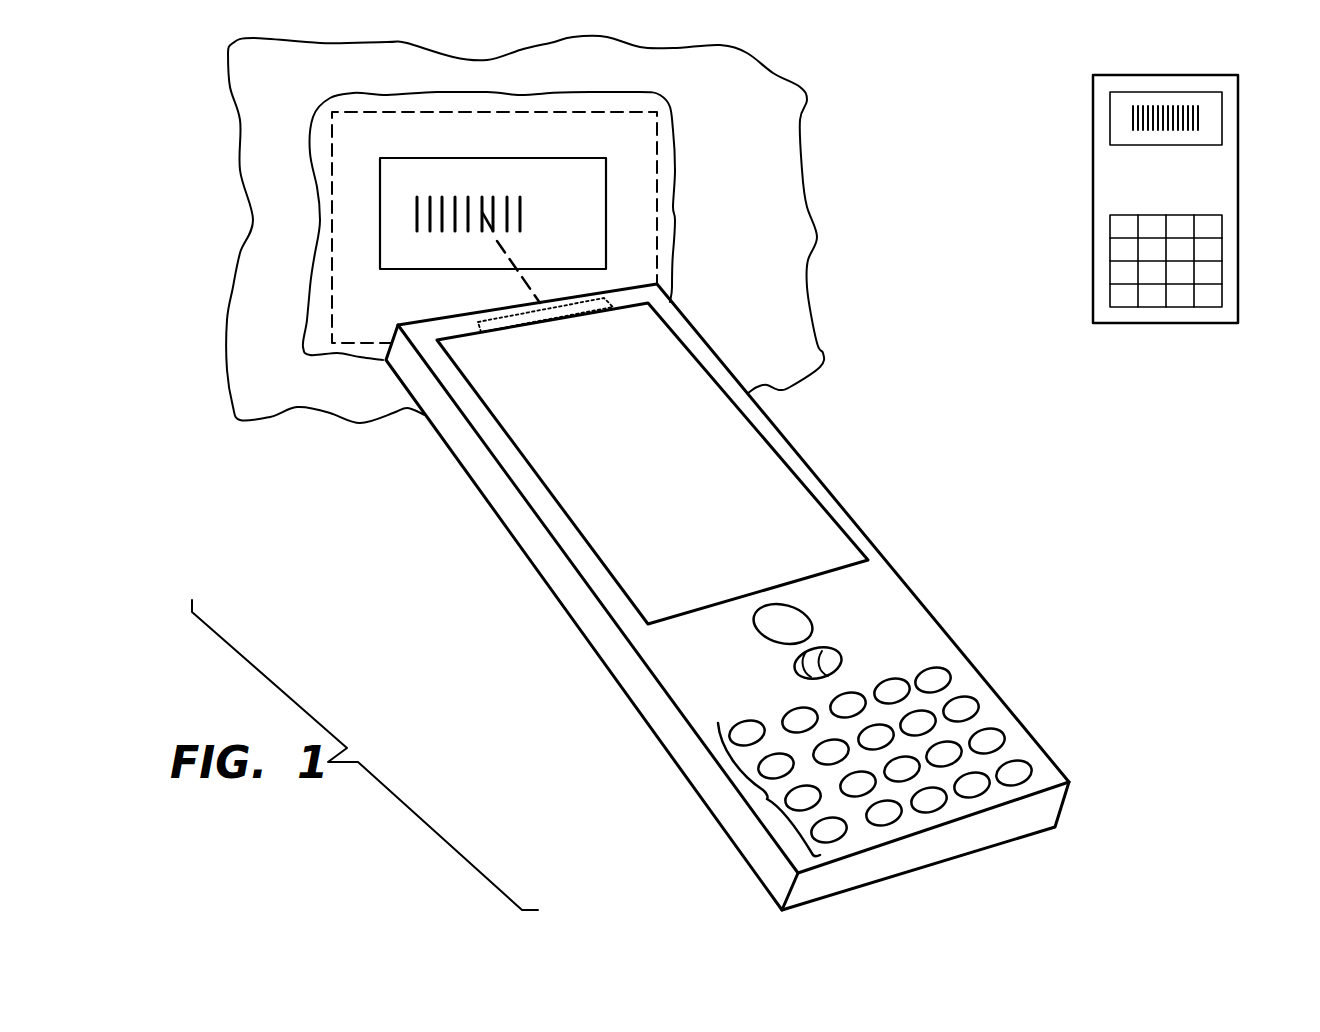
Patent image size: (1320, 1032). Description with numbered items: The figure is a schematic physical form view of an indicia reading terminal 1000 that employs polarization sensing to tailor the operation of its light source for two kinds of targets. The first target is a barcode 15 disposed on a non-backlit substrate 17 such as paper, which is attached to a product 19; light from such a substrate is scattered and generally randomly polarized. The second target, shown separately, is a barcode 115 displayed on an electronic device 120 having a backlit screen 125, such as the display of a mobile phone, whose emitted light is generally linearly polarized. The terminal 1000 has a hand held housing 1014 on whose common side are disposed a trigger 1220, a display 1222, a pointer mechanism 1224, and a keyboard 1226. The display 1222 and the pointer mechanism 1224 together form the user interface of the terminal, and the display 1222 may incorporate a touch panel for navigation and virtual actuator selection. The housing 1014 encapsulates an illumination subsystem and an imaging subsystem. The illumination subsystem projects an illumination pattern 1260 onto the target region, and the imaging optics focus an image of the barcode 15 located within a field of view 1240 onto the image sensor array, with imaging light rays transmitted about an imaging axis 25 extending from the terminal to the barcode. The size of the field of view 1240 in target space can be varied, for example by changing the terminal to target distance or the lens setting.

The barcode 15 is at (520, 210).
The non-backlit substrate 17 is at (383, 193).
The product 19 is at (808, 244).
The imaging axis 25 is at (513, 266).
The electronic device 120 is at (1053, 118).
The barcode 115 is at (1200, 110).
The backlit screen 125 is at (1215, 138).
The indicia reading terminal 1000 is at (846, 353).
The hand held housing 1014 is at (969, 688).
The trigger 1220 is at (810, 618).
The display 1222 is at (868, 560).
The pointer mechanism 1224 is at (838, 658).
The keyboard 1226 is at (767, 799).
The field of view 1240 is at (658, 202).
The illumination pattern 1260 is at (675, 162).